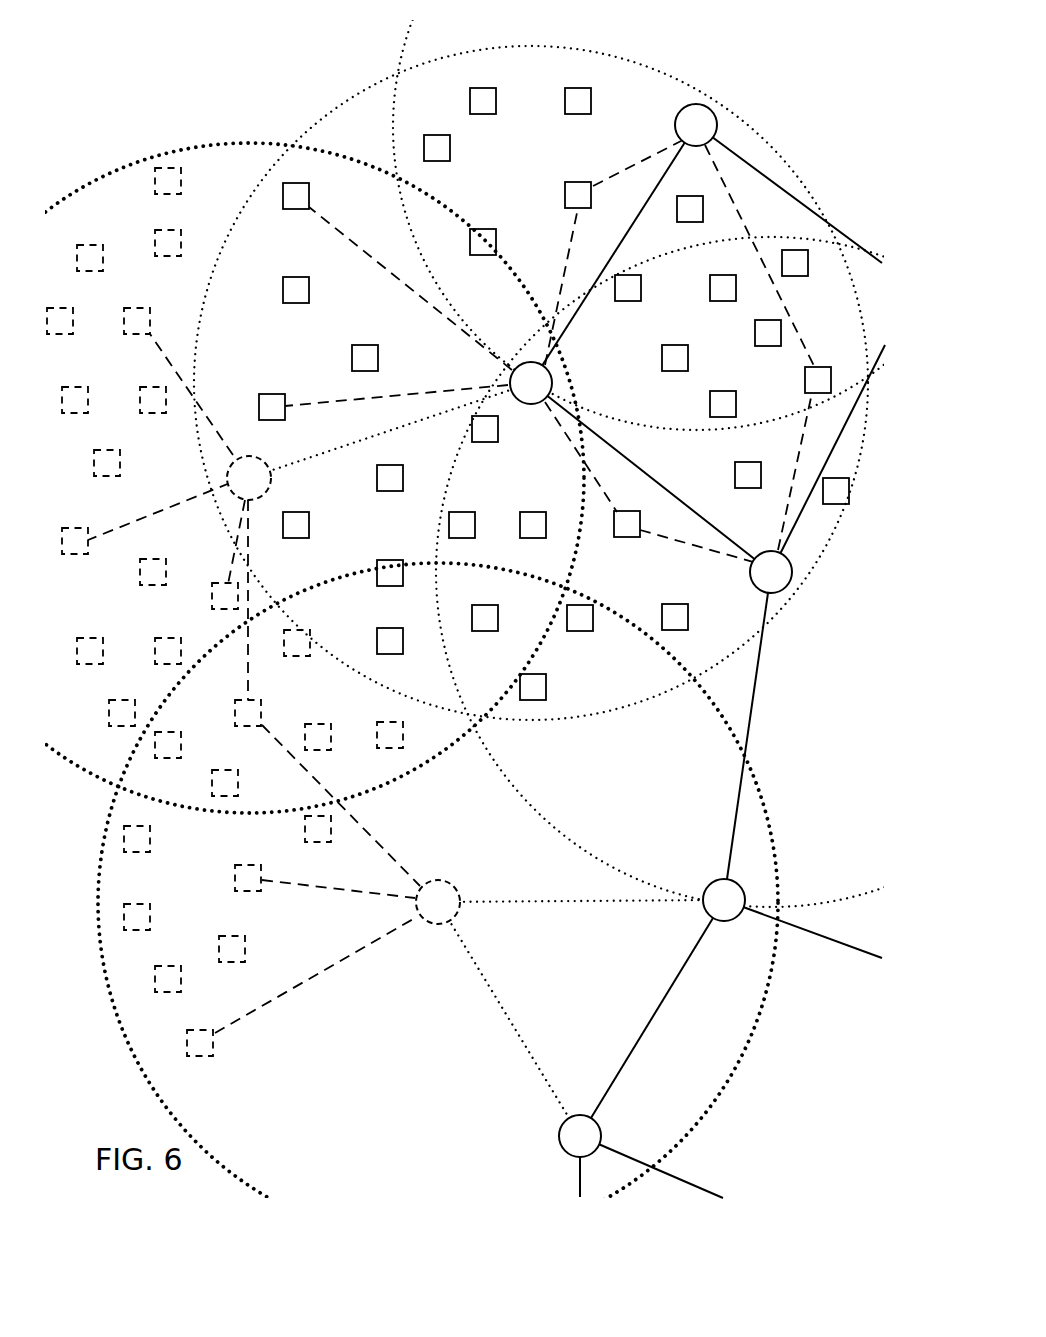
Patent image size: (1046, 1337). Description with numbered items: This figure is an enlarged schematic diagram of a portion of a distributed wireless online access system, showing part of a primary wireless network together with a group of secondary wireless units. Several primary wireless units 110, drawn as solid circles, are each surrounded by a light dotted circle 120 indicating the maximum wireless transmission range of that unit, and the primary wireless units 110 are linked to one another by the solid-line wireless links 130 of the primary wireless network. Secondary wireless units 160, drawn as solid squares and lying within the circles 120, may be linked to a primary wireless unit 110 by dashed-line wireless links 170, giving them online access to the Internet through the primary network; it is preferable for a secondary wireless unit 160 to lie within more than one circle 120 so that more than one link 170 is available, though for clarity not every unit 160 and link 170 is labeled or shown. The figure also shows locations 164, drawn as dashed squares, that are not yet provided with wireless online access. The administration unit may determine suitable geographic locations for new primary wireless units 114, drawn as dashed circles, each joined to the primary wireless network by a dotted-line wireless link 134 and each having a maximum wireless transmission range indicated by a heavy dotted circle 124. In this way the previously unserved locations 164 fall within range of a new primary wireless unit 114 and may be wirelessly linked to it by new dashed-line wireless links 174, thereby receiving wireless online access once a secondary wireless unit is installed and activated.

The primary wireless unit 110 is at (682, 136).
The new primary wireless unit 114 is at (235, 489).
The circle indicating maximum wireless transmission range 120 is at (330, 117).
The circle indicating maximum wireless transmission range of new primary wireless un 124 is at (108, 173).
The wireless link of the primary wireless network 130 is at (630, 228).
The wireless link to new primary wireless unit 134 is at (349, 447).
The secondary wireless unit 160 is at (293, 197).
The location without wireless online access 164 is at (160, 178).
The wireless link between secondary wireless unit and primary wireless unit 170 is at (333, 395).
The new wireless link 174 is at (167, 349).